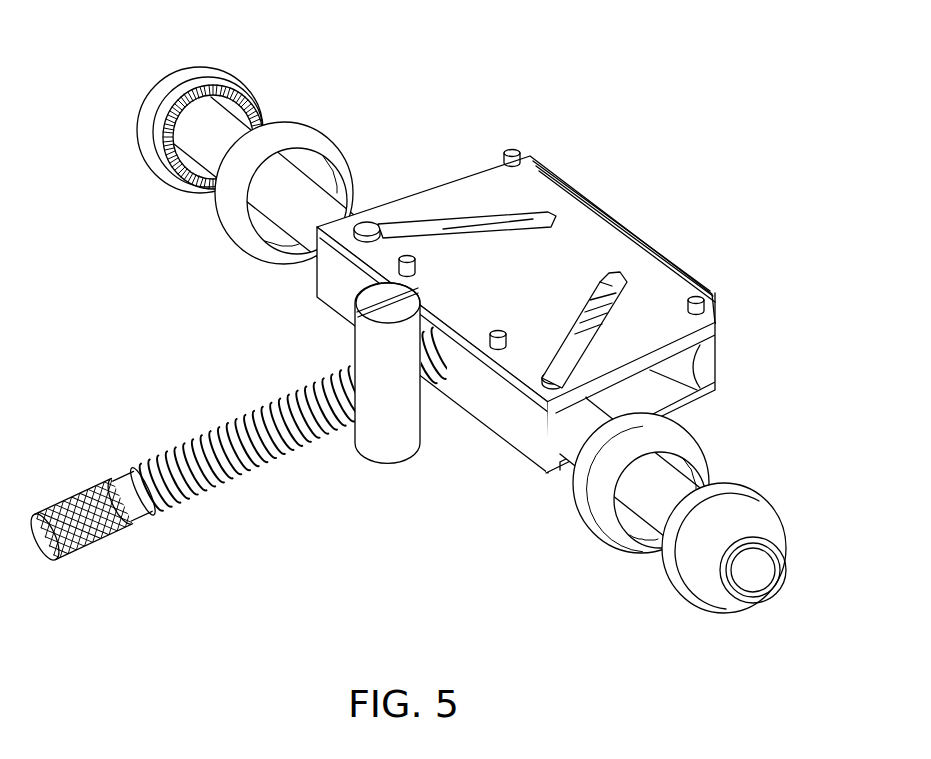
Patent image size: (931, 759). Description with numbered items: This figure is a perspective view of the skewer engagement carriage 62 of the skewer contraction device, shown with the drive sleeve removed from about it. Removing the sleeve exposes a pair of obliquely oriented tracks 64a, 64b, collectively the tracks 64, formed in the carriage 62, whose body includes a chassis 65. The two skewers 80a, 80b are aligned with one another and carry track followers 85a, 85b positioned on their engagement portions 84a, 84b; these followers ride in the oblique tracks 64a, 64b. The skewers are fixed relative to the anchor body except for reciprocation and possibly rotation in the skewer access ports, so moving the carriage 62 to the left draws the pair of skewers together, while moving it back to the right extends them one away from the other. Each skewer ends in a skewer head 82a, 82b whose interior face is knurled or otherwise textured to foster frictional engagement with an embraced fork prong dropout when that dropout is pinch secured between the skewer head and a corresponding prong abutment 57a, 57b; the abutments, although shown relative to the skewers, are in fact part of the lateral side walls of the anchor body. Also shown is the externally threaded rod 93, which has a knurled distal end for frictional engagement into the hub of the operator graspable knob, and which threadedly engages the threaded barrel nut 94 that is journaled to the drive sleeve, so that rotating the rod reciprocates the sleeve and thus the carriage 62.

The prong abutment 57a is at (300, 137).
The prong abutment 57b is at (672, 433).
The skewer engagement carriage 62 is at (600, 230).
The obliquely oriented tracks 64 is at (580, 301).
The obliquely oriented track 64a is at (435, 225).
The obliquely oriented track 64b is at (583, 340).
The chassis 65 is at (712, 363).
The skewer 80a is at (233, 130).
The skewer 80b is at (680, 490).
The skewer head 82a is at (193, 72).
The skewer head 82b is at (737, 528).
The engagement portion 84a is at (192, 193).
The engagement portion 84b is at (655, 568).
The track follower 85a is at (368, 222).
The track follower 85b is at (553, 372).
The threaded rod 93 is at (220, 480).
The barrel nut 94 is at (385, 443).